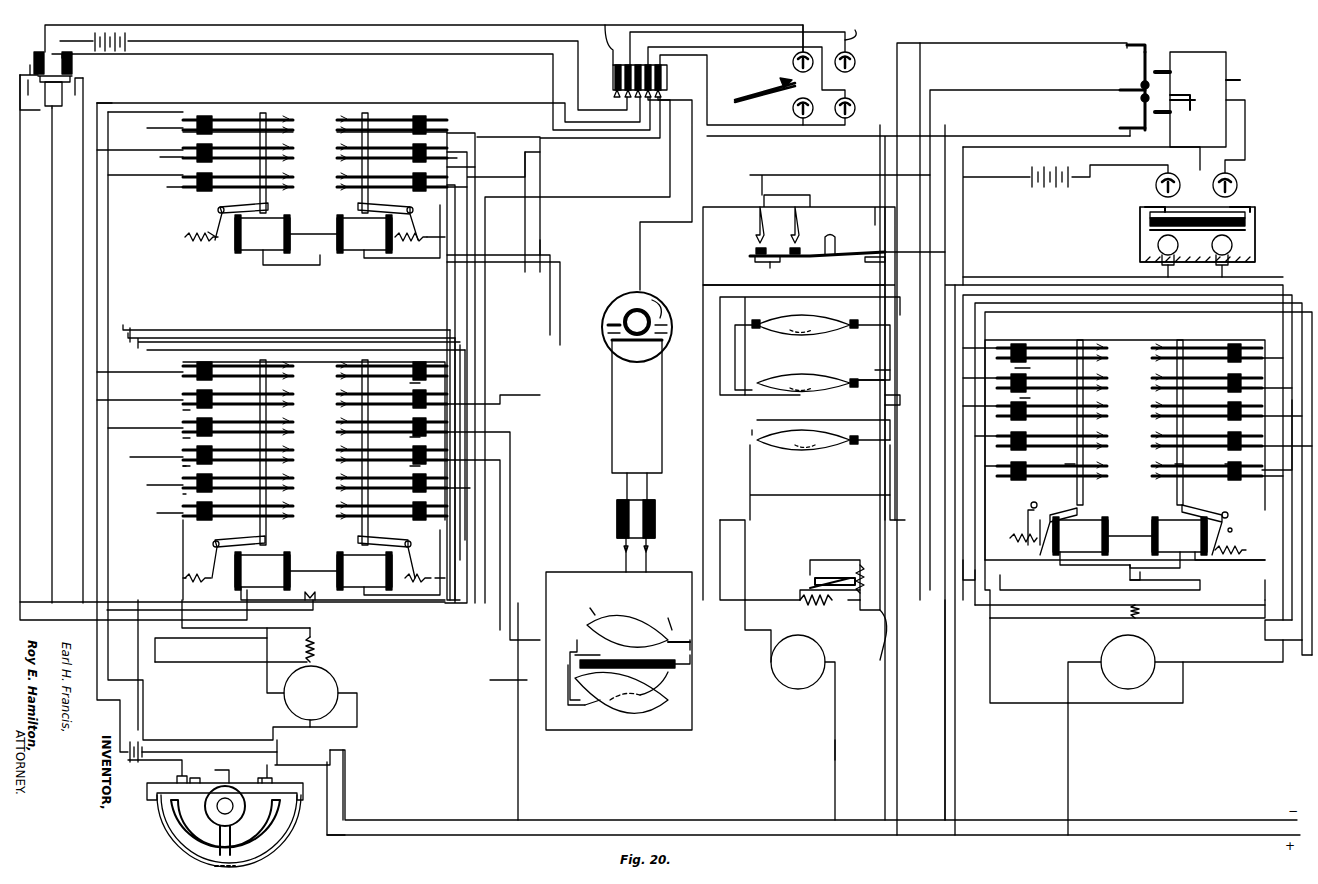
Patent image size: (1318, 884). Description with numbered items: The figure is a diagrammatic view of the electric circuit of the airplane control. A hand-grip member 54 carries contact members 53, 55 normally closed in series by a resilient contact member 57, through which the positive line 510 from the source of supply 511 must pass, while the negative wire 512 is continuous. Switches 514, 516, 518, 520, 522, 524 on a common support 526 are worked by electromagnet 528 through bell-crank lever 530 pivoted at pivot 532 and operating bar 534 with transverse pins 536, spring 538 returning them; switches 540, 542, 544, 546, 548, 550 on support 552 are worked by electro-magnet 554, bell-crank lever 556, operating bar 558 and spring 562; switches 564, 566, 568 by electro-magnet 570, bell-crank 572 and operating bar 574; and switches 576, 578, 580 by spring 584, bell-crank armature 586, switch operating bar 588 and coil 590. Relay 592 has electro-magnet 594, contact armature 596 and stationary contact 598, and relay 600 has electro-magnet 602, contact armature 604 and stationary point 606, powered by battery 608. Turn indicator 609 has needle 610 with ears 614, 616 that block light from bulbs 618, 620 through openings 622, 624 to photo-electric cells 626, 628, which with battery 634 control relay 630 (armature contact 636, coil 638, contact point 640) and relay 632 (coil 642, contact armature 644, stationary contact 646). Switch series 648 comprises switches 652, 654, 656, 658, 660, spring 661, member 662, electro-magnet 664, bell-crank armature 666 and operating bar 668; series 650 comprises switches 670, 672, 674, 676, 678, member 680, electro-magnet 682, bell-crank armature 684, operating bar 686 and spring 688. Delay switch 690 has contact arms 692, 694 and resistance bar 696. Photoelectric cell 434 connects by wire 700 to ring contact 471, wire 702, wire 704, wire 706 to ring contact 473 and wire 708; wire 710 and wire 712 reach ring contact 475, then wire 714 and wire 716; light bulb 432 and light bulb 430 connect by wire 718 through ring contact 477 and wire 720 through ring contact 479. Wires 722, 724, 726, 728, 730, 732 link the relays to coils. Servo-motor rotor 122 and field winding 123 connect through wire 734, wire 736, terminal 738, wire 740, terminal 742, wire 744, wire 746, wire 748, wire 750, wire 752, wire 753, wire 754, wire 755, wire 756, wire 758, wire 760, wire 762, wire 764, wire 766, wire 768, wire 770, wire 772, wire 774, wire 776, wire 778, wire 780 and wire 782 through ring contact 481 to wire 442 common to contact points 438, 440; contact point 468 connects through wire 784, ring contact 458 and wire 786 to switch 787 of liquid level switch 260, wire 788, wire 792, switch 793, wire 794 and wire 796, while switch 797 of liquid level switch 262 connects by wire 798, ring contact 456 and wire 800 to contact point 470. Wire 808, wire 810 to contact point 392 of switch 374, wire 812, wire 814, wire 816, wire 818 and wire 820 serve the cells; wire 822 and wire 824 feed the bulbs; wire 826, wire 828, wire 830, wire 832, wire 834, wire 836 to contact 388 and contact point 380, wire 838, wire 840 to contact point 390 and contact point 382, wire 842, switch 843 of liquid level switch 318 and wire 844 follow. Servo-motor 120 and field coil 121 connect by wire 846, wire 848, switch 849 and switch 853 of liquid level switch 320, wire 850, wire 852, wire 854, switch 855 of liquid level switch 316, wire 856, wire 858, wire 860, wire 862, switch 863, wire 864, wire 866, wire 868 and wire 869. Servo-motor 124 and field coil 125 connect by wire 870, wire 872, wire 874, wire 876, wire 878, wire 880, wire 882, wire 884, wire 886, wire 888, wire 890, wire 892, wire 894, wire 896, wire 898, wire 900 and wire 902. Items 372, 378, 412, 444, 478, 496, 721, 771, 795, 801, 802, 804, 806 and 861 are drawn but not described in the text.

The terminal 53 is at (164, 766).
The terminal 54 is at (220, 766).
The terminal 55 is at (284, 766).
The dial housing 57 is at (225, 825).
The motor 120 is at (826, 655).
The resistor 121 is at (810, 608).
The motor 122 is at (338, 683).
The resistor 123 is at (329, 649).
The motor 124 is at (1128, 669).
The resistor 125 is at (1154, 607).
The lens 260 is at (666, 614).
The lens 262 is at (627, 712).
The contact 316 is at (801, 343).
The contact 318 is at (793, 400).
The contact 320 is at (795, 455).
The contact 372 is at (846, 240).
The contact 374 is at (865, 250).
The lever 378 is at (803, 260).
The contact 380 is at (746, 243).
The contact 382 is at (785, 243).
The pointer 388 is at (748, 225).
The pointer 390 is at (787, 225).
The pivot 392 is at (752, 272).
The arrow 412 is at (757, 90).
The lamp 430 is at (786, 110).
The lamp 432 is at (842, 111).
The lamp 434 is at (786, 59).
The meter element 438 is at (676, 305).
The contact 440 is at (596, 319).
The wire 442 is at (612, 283).
The meter 444 is at (637, 327).
The plug 456 is at (617, 519).
The plug 458 is at (654, 526).
The contact 468 is at (676, 340).
The contact 470 is at (596, 344).
The connector pin 471 is at (624, 70).
The connector pin 473 is at (606, 77).
The connector pin 475 is at (611, 79).
The connector pin 477 is at (669, 70).
The lens 478 is at (623, 663).
The connector pin 479 is at (674, 77).
The connector pin 481 is at (653, 94).
The lamp 496 is at (859, 54).
The wire 510 is at (306, 797).
The battery 511 is at (128, 742).
The wire 512 is at (462, 820).
The contact 514 is at (251, 369).
The contact 516 is at (251, 397).
The contact 518 is at (251, 425).
The contact 520 is at (251, 453).
The contact 522 is at (251, 481).
The contact 524 is at (251, 510).
The contact 526 is at (215, 464).
The relay coil 528 is at (340, 576).
The spring 530 is at (198, 566).
The armature 532 is at (226, 552).
The contact 534 is at (215, 436).
The contact 536 is at (215, 408).
The spring anchor 538 is at (197, 585).
The contact 540 is at (258, 379).
The contact 542 is at (258, 407).
The contact 544 is at (258, 435).
The contact 546 is at (258, 463).
The contact 548 is at (258, 491).
The armature 550 is at (383, 469).
The contact 552 is at (400, 436).
The relay coil 554 is at (388, 562).
The spring 556 is at (420, 565).
The contact 558 is at (400, 464).
The spring anchor 562 is at (425, 589).
The contact 564 is at (252, 132).
The contact 566 is at (252, 161).
The contact 568 is at (252, 190).
The relay coil 570 is at (286, 240).
The spring 572 is at (200, 227).
The armature 574 is at (241, 176).
The contact 576 is at (251, 185).
The contact 578 is at (252, 151).
The contact 580 is at (252, 180).
The spring anchor 584 is at (432, 244).
The spring 586 is at (419, 225).
The armature 588 is at (392, 176).
The relay coil 590 is at (388, 231).
The switch body 592 is at (90, 74).
The switch bar 594 is at (74, 62).
The switch lead 596 is at (67, 108).
The switch frame 598 is at (92, 90).
The switch contact 600 is at (38, 52).
The switch contact 602 is at (41, 57).
The switch lead 604 is at (35, 92).
The switch lead 606 is at (24, 64).
The wire 608 is at (130, 41).
The lamp housing 609 is at (1185, 227).
The reflector 610 is at (1250, 212).
The housing wall 614 is at (1137, 215).
The filter 616 is at (1224, 216).
The lamp 618 is at (1144, 250).
The lamp 620 is at (1233, 256).
The partition 622 is at (1177, 234).
The housing wall 624 is at (1264, 227).
The lamp 626 is at (1152, 185).
The lamp 628 is at (1245, 185).
The contact 630 is at (1117, 102).
The contact 632 is at (1117, 91).
The battery 634 is at (1050, 187).
The contact 636 is at (1122, 120).
The contact 638 is at (1184, 122).
The lead 640 is at (1131, 136).
The contact 642 is at (1181, 70).
The pivot 644 is at (1129, 85).
The contact 646 is at (1155, 37).
The armature 648 is at (1079, 447).
The armature 650 is at (1201, 447).
The contact 652 is at (1065, 348).
The contact 654 is at (1062, 378).
The contact 656 is at (1062, 406).
The contact 658 is at (1065, 438).
The contact 660 is at (1065, 467).
The spring 661 is at (1021, 544).
The contact 662 is at (1037, 396).
The relay coil 664 is at (1102, 541).
The spring anchor 666 is at (1022, 528).
The contact 668 is at (1055, 462).
The contact 670 is at (1072, 356).
The contact 672 is at (1072, 386).
The contact 674 is at (1070, 416).
The contact 676 is at (1072, 446).
The contact 678 is at (1072, 476).
The contact 680 is at (1241, 462).
The relay coil 682 is at (1197, 542).
The pivot 684 is at (1243, 520).
The contact 686 is at (1191, 462).
The spring 688 is at (1231, 559).
The switch 690 is at (835, 569).
The switch blade 692 is at (817, 574).
The spring 694 is at (842, 586).
The lead 696 is at (855, 376).
The wire 700 is at (820, 33).
The wire 702 is at (465, 25).
The battery 704 is at (92, 36).
The wire 706 is at (350, 54).
The wire 708 is at (716, 61).
The wire 710 is at (737, 62).
The wire 712 is at (865, 27).
The wire 714 is at (500, 54).
The wire 716 is at (72, 47).
The wire 718 is at (480, 103).
The wire 720 is at (108, 250).
The wire 722 is at (36, 230).
The wire 724 is at (52, 112).
The wire 726 is at (311, 581).
The wire 728 is at (224, 607).
The wire 730 is at (97, 180).
The wire 732 is at (83, 125).
The wire 734 is at (351, 710).
The wire 736 is at (150, 103).
The wire 738 is at (246, 614).
The wire 740 is at (520, 137).
The wire 742 is at (305, 650).
The wire 744 is at (560, 253).
The wire 746 is at (485, 177).
The wire 748 is at (503, 441).
The wire 750 is at (258, 688).
The wire 752 is at (437, 366).
The wire 753 is at (132, 328).
The wire 754 is at (264, 559).
The wire 755 is at (108, 428).
The wire 756 is at (172, 298).
The wire 758 is at (140, 157).
The wire 760 is at (176, 492).
The wire 762 is at (316, 315).
The wire 764 is at (475, 531).
The wire 766 is at (176, 464).
The wire 768 is at (292, 409).
The wire 770 is at (493, 517).
The wire 771 is at (119, 498).
The wire 772 is at (306, 481).
The wire 774 is at (275, 322).
The wire 776 is at (460, 477).
The wire 778 is at (97, 372).
The wire 780 is at (240, 452).
The wire 782 is at (584, 350).
The housing 784 is at (637, 406).
The wire 786 is at (664, 558).
The wire 787 is at (677, 630).
The wire 788 is at (631, 460).
The housing 792 is at (619, 651).
The wire 793 is at (606, 606).
The wire 794 is at (587, 667).
The wire 795 is at (601, 651).
The wire 796 is at (705, 632).
The wire 797 is at (671, 688).
The wire 798 is at (608, 557).
The wire 800 is at (612, 460).
The wire 801 is at (588, 685).
The wire 802 is at (698, 663).
The wire 804 is at (587, 715).
The shutter 806 is at (627, 667).
The wire 808 is at (1090, 158).
The wire 810 is at (1114, 472).
The wire 812 is at (912, 240).
The wire 814 is at (1065, 216).
The frame 816 is at (1212, 99).
The contact 818 is at (1216, 89).
The wire 820 is at (1244, 136).
The wire 822 is at (1101, 545).
The wire 824 is at (948, 735).
The wire 826 is at (990, 43).
The wire 828 is at (1100, 582).
The wire 830 is at (990, 133).
The wire 832 is at (1102, 572).
The wire 834 is at (1065, 90).
The wire 836 is at (845, 175).
The wire 838 is at (794, 278).
The wire 840 is at (1039, 155).
The wire 842 is at (791, 397).
The contact 843 is at (800, 376).
The wire 844 is at (824, 477).
The wire 846 is at (835, 740).
The wire 848 is at (751, 560).
The contact 849 is at (821, 433).
The wire 850 is at (822, 404).
The wire 852 is at (820, 482).
The wire 853 is at (860, 452).
The contact 854 is at (845, 430).
The contact 855 is at (802, 322).
The wire 856 is at (864, 551).
The wire 858 is at (728, 431).
The wire 860 is at (807, 589).
The wire 861 is at (867, 369).
The wire 862 is at (871, 640).
The wire 863 is at (851, 368).
The contact 864 is at (876, 372).
The wire 866 is at (870, 514).
The wire 868 is at (870, 352).
The wire 869 is at (760, 552).
The wire 870 is at (1068, 735).
The wire 872 is at (1233, 651).
The pivot 874 is at (1017, 519).
The wire 876 is at (967, 546).
The wire 878 is at (1045, 660).
The wire 880 is at (1266, 610).
The wire 882 is at (1287, 417).
The wire 884 is at (1125, 450).
The wire 886 is at (1120, 606).
The wire 888 is at (985, 407).
The wire 890 is at (1148, 475).
The wire 892 is at (1291, 651).
The wire 894 is at (1287, 435).
The wire 896 is at (1035, 366).
The wire 898 is at (1127, 625).
The wire 900 is at (1145, 454).
The wire 902 is at (1127, 444).